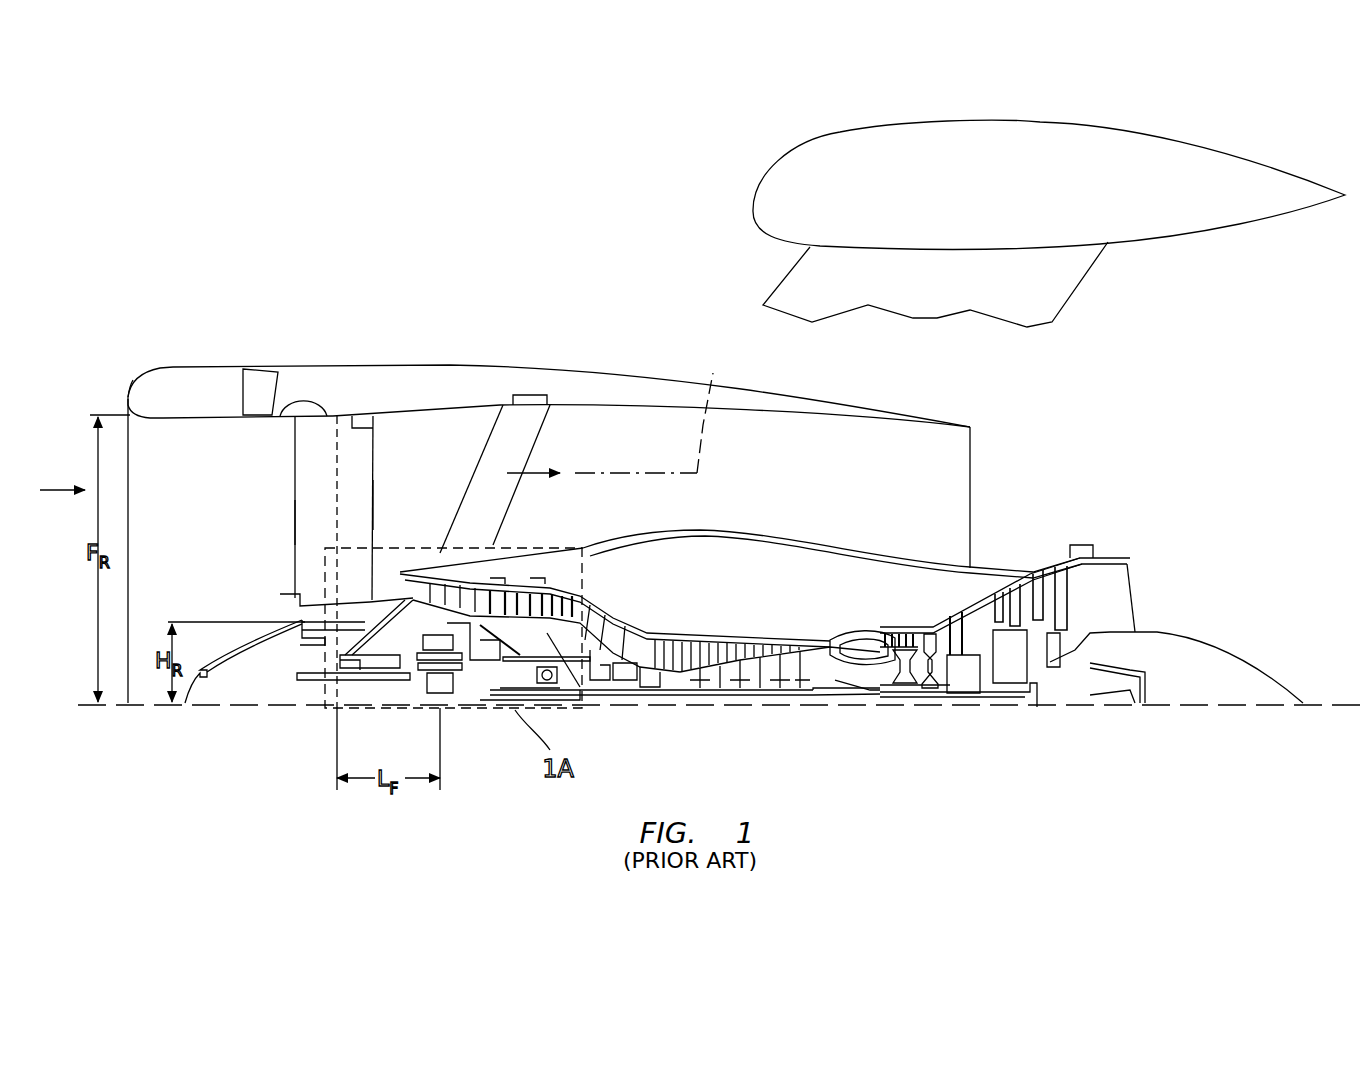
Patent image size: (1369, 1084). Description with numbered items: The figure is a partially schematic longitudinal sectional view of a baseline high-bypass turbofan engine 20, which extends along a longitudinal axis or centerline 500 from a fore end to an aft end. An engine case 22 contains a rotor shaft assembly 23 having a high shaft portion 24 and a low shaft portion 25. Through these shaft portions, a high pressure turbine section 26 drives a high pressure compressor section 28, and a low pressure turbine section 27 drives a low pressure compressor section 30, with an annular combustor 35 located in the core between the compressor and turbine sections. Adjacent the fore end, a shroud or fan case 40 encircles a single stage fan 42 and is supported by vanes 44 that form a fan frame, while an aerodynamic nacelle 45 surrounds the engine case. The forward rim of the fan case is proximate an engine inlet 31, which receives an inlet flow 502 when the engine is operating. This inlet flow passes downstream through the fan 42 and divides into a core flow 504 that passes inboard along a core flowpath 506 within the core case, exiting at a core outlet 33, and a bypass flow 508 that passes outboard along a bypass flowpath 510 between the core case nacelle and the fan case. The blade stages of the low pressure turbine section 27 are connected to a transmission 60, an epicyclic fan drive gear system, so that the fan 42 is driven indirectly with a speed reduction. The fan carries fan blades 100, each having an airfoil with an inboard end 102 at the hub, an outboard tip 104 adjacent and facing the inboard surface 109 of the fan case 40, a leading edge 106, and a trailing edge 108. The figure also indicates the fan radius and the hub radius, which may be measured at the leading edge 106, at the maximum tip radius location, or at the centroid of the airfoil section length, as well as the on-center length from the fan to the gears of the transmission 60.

The turbofan engine 20 is at (490, 258).
The engine case 22 is at (773, 613).
The rotor shaft assembly 23 is at (682, 698).
The high shaft portion 24 is at (848, 690).
The low shaft portion 25 is at (817, 698).
The high pressure turbine section 26 is at (923, 630).
The low pressure turbine section 27 is at (1033, 570).
The high pressure compressor section 28 is at (728, 637).
The low pressure compressor section 30 is at (567, 590).
The engine inlet 31 is at (109, 403).
The core outlet 33 is at (1147, 587).
The combustor 35 is at (863, 630).
The fan case 40 is at (360, 398).
The fan 42 is at (282, 560).
The vanes 44 is at (512, 455).
The nacelle 45 is at (858, 543).
The transmission 60 is at (442, 683).
The fan blades 100 is at (306, 473).
The inboard end 102 is at (320, 617).
The outboard tip 104 is at (292, 413).
The leading edge 106 is at (295, 522).
The trailing edge 108 is at (373, 507).
The inboard surface 109 is at (373, 428).
The longitudinal axis 500 is at (112, 712).
The inlet flow 502 is at (57, 490).
The core flow 504 is at (360, 573).
The core flowpath 506 is at (472, 540).
The bypass flow 508 is at (545, 473).
The bypass flowpath 510 is at (715, 411).